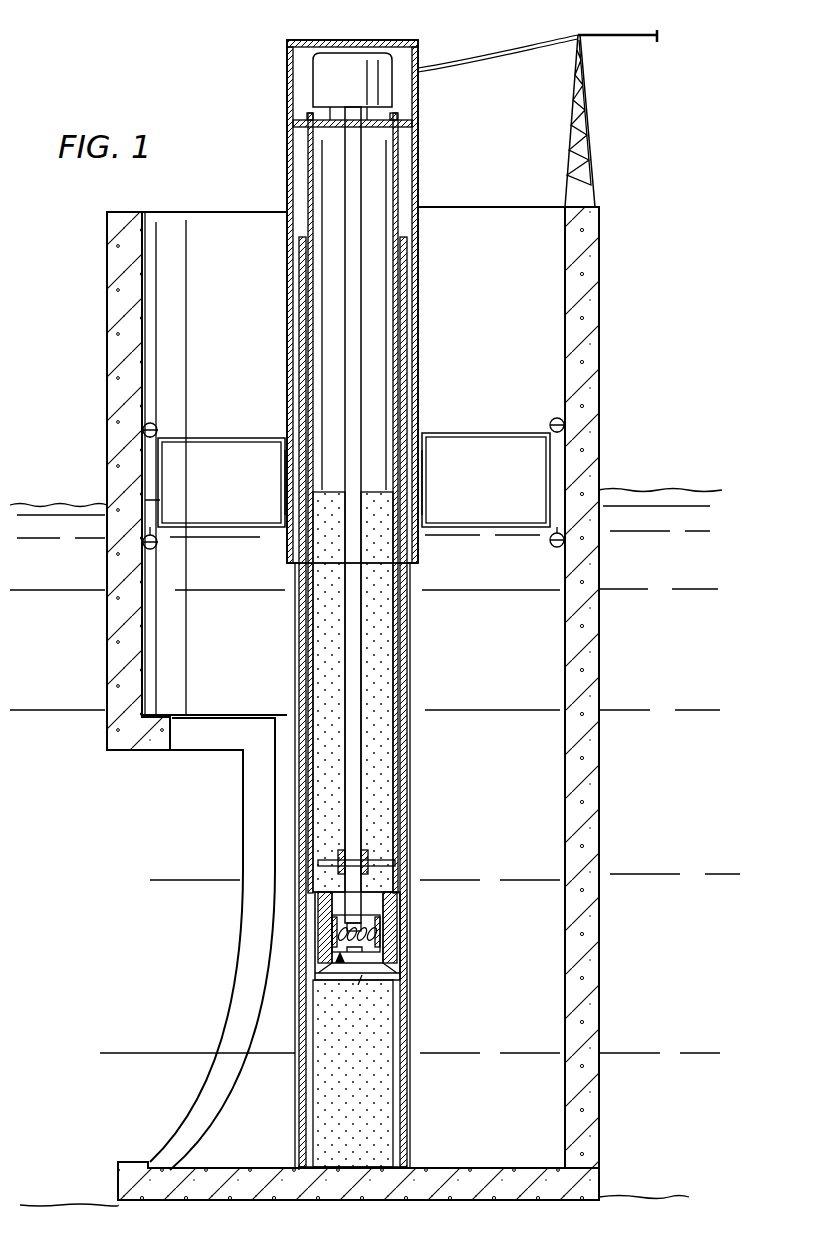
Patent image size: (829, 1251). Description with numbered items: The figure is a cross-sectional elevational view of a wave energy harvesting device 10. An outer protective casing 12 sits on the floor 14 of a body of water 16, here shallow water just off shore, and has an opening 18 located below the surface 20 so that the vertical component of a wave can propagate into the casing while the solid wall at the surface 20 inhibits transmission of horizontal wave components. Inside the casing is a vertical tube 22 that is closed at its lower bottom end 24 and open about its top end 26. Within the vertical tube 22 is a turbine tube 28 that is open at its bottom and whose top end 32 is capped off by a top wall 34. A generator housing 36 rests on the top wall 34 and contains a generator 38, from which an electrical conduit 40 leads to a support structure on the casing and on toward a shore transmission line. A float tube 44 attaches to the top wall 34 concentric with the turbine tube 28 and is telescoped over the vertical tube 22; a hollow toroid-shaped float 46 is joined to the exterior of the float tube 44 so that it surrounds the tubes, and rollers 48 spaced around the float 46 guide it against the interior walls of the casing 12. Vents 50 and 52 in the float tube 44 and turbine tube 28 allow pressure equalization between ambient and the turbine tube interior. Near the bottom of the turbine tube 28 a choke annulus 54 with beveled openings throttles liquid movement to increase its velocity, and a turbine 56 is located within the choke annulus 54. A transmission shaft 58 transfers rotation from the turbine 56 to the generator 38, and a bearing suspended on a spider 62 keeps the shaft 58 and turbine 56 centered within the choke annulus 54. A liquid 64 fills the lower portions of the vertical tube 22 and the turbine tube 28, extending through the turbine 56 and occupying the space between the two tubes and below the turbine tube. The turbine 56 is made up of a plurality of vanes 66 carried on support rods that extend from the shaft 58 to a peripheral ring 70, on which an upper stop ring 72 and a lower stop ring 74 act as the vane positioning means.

The wave energy harvesting device 10 is at (200, 122).
The outer protective casing 12 is at (600, 838).
The floor 14 is at (637, 1212).
The body of water 16 is at (690, 572).
The opening 18 is at (286, 957).
The surface 20 is at (62, 502).
The vertical tube 22 is at (412, 1092).
The lower bottom end 24 is at (372, 1166).
The top end 26 is at (403, 233).
The turbine tube 28 is at (405, 258).
The top end 32 is at (400, 128).
The top wall 34 is at (400, 115).
The generator housing 36 is at (408, 40).
The generator 38 is at (318, 63).
The electrical conduit 40 is at (525, 56).
The float tube 44 is at (420, 177).
The float 46 is at (238, 437).
The rollers 48 is at (157, 428).
The vent 50 is at (287, 155).
The vent 52 is at (314, 160).
The choke annulus 54 is at (395, 978).
The turbine 56 is at (340, 968).
The transmission shaft 58 is at (350, 334).
The spider 62 is at (330, 858).
The liquid 64 is at (400, 606).
The vanes 66 is at (390, 862).
The peripheral ring 70 is at (382, 928).
The upper stop ring 72 is at (380, 912).
The lower stop ring 74 is at (365, 975).